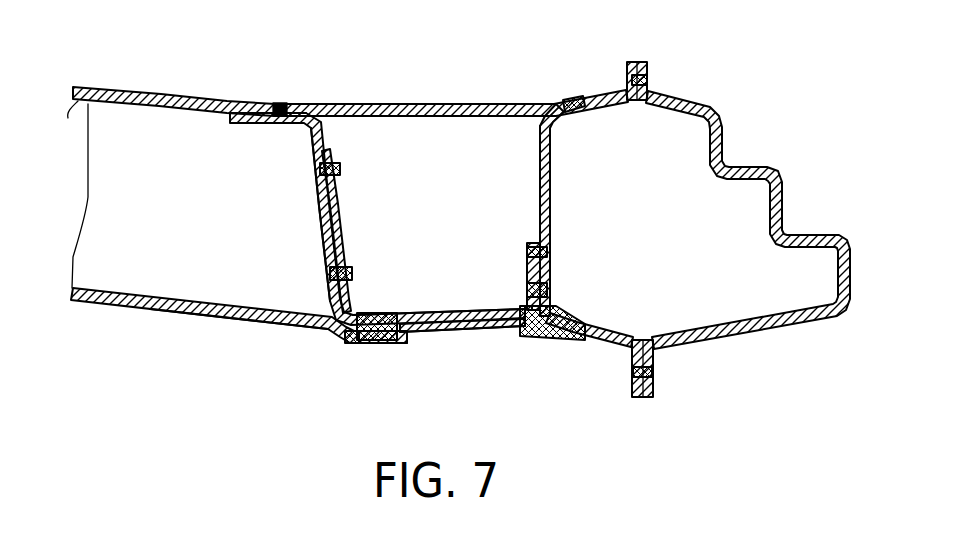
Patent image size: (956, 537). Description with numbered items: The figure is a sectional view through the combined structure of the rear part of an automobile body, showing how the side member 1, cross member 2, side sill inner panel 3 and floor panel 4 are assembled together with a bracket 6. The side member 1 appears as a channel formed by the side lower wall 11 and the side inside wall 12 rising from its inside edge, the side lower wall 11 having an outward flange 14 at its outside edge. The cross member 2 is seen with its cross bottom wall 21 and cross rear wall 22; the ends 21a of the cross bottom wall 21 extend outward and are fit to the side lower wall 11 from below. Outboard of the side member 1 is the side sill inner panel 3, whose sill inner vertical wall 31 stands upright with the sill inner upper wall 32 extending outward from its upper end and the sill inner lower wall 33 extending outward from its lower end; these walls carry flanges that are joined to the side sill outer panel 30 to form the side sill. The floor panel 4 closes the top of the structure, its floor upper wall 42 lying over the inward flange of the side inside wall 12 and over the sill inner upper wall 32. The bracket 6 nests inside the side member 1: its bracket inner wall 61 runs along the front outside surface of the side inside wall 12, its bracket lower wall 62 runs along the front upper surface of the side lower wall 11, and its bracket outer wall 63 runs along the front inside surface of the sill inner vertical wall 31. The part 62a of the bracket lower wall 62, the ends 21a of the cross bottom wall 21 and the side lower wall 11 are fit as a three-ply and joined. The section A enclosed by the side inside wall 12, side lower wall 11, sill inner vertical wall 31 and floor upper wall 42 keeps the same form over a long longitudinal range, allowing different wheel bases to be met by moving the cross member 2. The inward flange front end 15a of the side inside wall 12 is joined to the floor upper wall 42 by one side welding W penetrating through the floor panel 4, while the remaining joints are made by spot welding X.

The side member 1 is at (428, 342).
The cross member 2 is at (152, 304).
The side sill inner panel 3 is at (556, 156).
The floor panel 4 is at (152, 86).
The bracket 6 is at (352, 249).
The side lower wall 11 is at (462, 334).
The side inside wall 12 is at (318, 214).
The outward flange 14 is at (540, 341).
The inward flange front end 15a is at (262, 124).
The cross bottom wall 21 is at (225, 326).
The both ends of cross bottom wall 21a is at (375, 343).
The cross rear wall 22 is at (90, 186).
The side sill outer panel 30 is at (733, 129).
The sill inner vertical wall 31 is at (552, 205).
The sill inner upper wall 32 is at (610, 98).
The sill inner lower wall 33 is at (612, 329).
The floor upper wall 42 is at (397, 103).
The bracket inner wall 61 is at (352, 194).
The bracket lower wall 62 is at (440, 316).
The part of bracket lower wall 62a is at (380, 314).
The bracket outer wall 63 is at (527, 270).
The section A is at (460, 146).
The one side welding W is at (280, 102).
The spot welding X is at (567, 99).